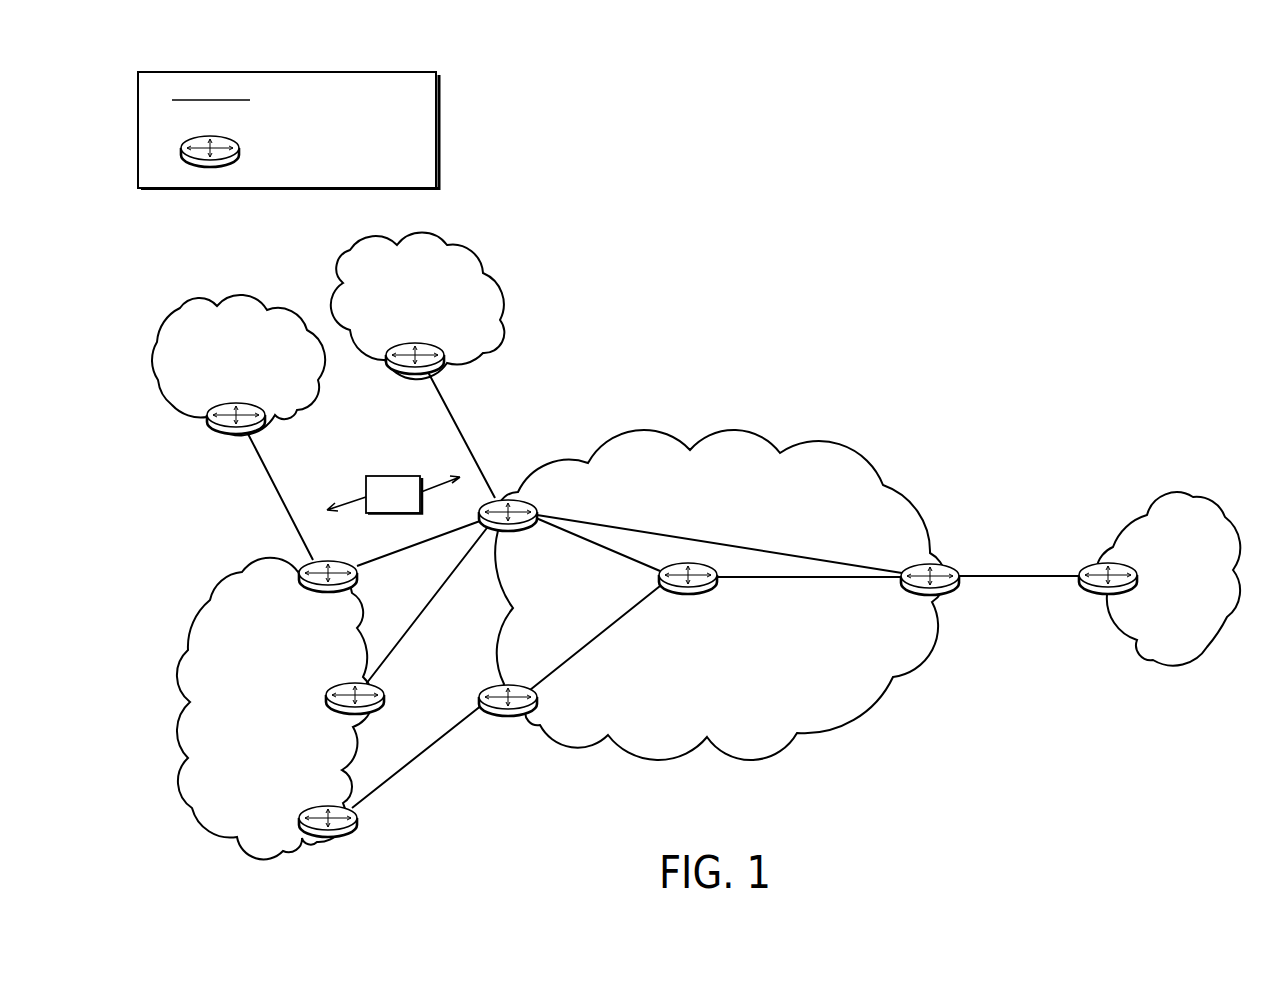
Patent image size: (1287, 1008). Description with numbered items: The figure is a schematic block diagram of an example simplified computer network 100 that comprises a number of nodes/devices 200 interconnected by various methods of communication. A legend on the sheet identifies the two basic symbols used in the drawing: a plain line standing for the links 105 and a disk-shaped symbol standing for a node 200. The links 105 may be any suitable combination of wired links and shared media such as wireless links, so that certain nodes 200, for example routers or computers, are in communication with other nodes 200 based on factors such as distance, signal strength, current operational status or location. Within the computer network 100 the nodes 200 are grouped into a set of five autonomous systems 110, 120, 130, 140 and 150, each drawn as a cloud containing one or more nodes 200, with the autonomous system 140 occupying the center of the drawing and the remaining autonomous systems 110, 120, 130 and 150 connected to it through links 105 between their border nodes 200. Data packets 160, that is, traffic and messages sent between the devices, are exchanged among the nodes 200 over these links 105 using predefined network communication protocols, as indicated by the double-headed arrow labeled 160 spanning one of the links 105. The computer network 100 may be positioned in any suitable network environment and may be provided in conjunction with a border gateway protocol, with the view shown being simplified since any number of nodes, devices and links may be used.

The computer network 100 is at (700, 465).
The links 105 is at (609, 440).
The autonomous system 110 is at (270, 369).
The autonomous system 120 is at (451, 306).
The autonomous system 130 is at (289, 707).
The autonomous system 140 is at (773, 670).
The autonomous system 150 is at (1192, 604).
The data packets 160 is at (408, 507).
The nodes/devices 200 is at (282, 151).